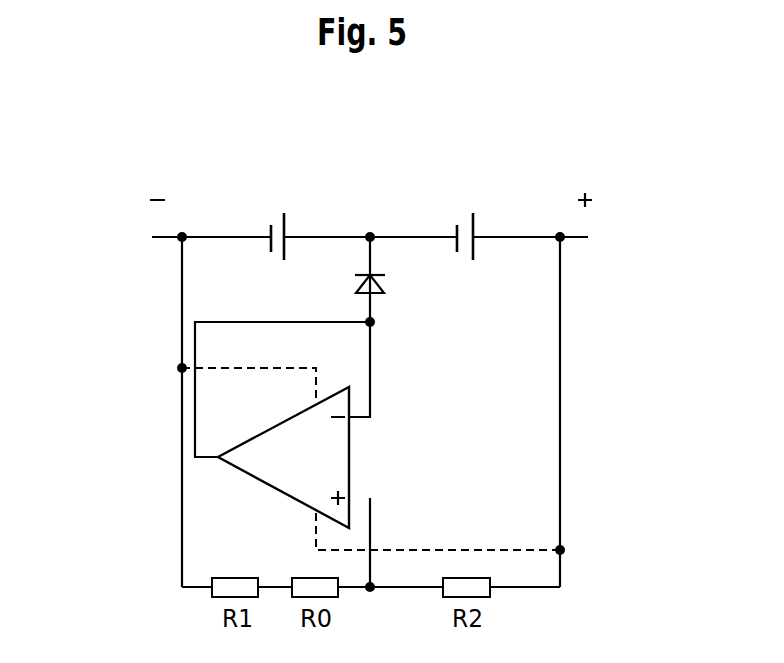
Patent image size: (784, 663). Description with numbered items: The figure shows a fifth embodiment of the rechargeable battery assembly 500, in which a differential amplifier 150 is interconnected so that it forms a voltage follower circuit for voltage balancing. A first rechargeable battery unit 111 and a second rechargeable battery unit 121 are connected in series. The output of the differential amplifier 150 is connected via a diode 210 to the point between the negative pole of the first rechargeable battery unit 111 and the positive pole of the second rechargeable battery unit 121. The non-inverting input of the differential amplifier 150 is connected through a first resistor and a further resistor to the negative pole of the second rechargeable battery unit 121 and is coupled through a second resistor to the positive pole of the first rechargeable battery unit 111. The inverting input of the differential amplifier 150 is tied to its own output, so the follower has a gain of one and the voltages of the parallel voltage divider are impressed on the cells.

The second rechargeable battery unit 121 is at (268, 228).
The first rechargeable battery unit 111 is at (473, 228).
The diode 210 is at (385, 287).
The differential amplifier 150 is at (268, 488).
The balancing circuit 500 is at (602, 332).